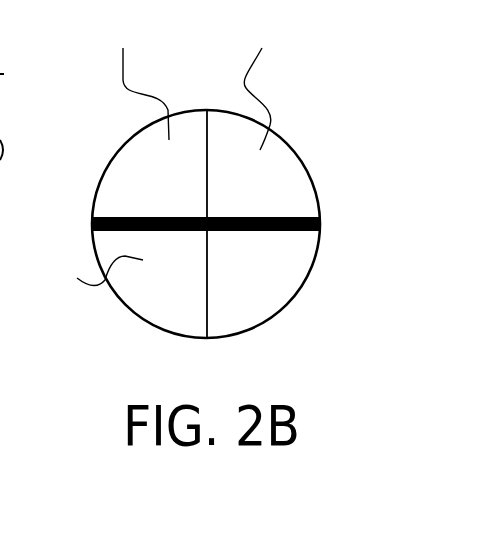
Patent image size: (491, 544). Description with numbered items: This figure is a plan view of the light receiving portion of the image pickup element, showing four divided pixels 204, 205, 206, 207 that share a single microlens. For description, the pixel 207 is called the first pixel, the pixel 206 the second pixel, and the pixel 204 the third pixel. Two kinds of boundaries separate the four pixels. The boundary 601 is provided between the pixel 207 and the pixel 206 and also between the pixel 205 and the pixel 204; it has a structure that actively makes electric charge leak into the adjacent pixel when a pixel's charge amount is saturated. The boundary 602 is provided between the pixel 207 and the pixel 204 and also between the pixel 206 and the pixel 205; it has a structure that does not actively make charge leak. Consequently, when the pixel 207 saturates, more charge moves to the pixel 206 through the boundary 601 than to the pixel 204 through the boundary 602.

The pixel 204 is at (265, 252).
The pixel 205 is at (79, 278).
The pixel 206 is at (136, 74).
The pixel 207 is at (262, 78).
The boundary 601 is at (206, 321).
The boundary 602 is at (308, 217).